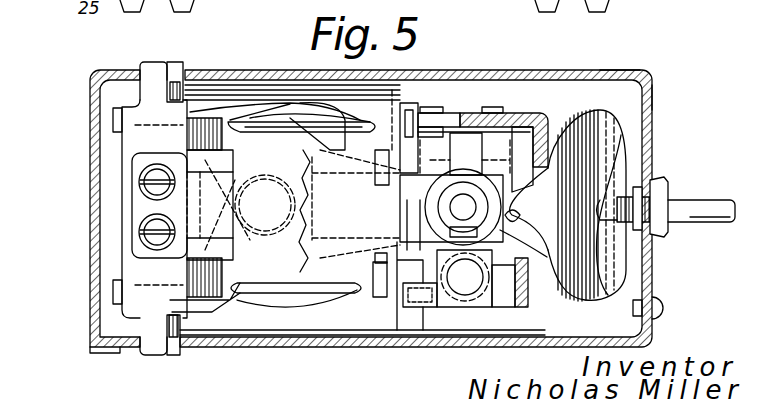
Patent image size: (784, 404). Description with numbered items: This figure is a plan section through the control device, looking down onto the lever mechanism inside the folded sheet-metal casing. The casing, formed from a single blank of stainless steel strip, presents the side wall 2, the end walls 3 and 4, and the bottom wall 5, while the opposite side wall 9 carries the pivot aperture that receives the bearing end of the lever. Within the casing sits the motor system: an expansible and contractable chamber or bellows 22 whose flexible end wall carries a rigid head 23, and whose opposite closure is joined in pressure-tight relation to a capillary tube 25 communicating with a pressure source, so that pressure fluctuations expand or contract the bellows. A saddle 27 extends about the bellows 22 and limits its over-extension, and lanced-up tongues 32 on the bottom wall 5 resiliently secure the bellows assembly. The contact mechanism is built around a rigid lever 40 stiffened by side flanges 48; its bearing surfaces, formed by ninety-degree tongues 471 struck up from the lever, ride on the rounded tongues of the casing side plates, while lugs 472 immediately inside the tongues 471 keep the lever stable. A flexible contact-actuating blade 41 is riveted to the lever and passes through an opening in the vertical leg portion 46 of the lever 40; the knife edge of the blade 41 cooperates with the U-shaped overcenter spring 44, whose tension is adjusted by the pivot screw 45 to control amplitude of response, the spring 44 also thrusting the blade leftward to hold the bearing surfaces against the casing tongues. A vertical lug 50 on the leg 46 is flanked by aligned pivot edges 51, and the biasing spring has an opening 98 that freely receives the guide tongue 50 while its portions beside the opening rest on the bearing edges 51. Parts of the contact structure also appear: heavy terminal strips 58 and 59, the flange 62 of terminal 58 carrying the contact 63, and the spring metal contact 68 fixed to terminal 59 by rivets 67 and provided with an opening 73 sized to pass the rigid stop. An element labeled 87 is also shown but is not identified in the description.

The side wall 2 is at (245, 72).
The end wall 3 is at (90, 145).
The end wall 4 is at (653, 90).
The bottom wall 5 is at (623, 90).
The opposite side wall 9 is at (226, 349).
The expansible and contractable chamber 22 is at (263, 110).
The rigid head 23 is at (227, 215).
The tube 25 is at (722, 224).
The saddle 27 is at (340, 110).
The lanced-up tongues 32 is at (427, 305).
The rigid lever 40 is at (140, 270).
The flexible contact-actuating blade 41 is at (183, 203).
The overcenter spring 44 is at (603, 140).
The pivot screw 45 is at (678, 198).
The vertical leg portion 46 is at (370, 279).
The flanges 48 is at (250, 123).
The vertical lug 50 is at (362, 193).
The pivot edges 51 is at (393, 90).
The terminal strip 58 is at (530, 300).
The terminal strip 59 is at (555, 125).
The flange 62 is at (505, 297).
The contact 63 is at (457, 290).
The rivets 67 is at (435, 107).
The spring metal contact 68 is at (512, 112).
The opening 73 is at (465, 145).
The pivot 87 is at (300, 205).
The opening 98 is at (360, 204).
The ninety-degree tongues 471 is at (171, 64).
The lugs 472 is at (158, 62).